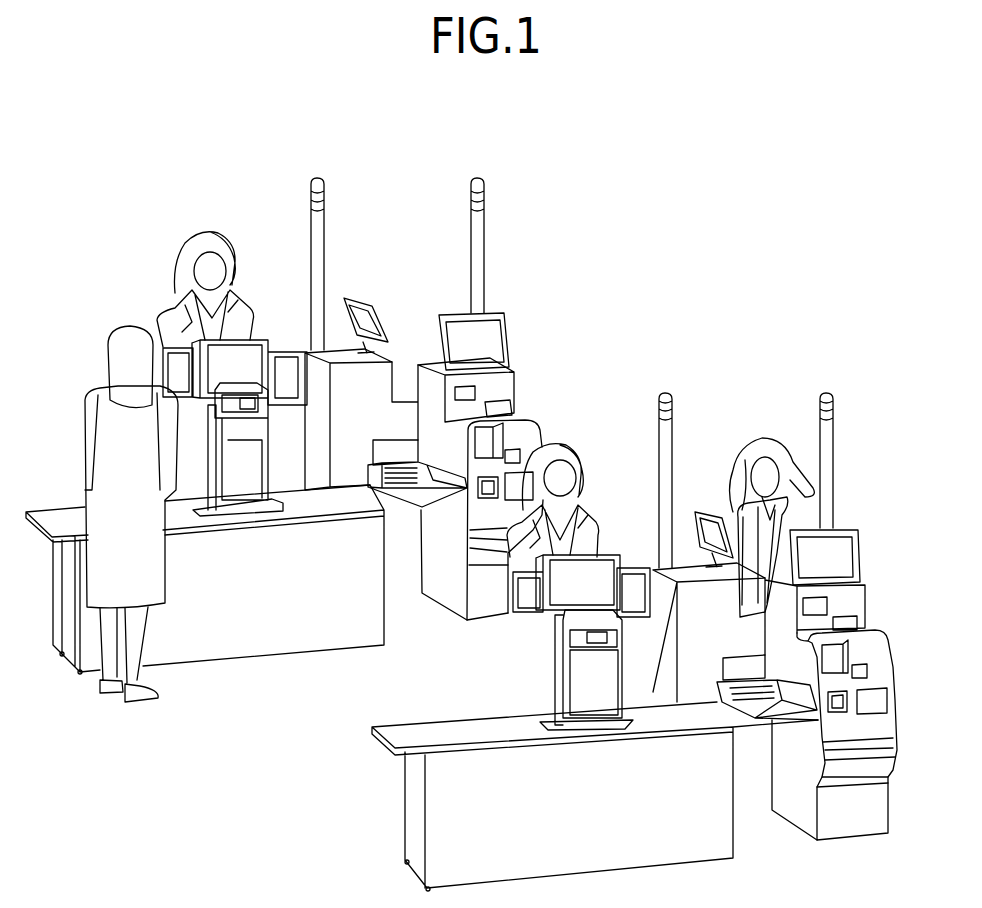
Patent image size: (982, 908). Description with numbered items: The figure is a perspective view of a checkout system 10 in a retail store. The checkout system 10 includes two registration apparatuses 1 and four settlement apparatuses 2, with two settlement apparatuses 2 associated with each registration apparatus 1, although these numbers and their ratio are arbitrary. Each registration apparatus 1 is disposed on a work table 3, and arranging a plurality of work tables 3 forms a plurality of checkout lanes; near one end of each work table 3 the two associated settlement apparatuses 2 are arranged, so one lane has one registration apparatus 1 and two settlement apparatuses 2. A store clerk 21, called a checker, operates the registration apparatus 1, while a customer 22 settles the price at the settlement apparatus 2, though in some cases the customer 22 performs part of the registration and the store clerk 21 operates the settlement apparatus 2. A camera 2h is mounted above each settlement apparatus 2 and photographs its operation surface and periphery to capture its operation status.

The registration apparatus 1 is at (267, 309).
The settlement apparatus 2 is at (363, 284).
The camera 2h is at (318, 174).
The work table 3 is at (50, 504).
The checkout system 10 is at (727, 272).
The store clerk 21 is at (231, 248).
The customer 22 is at (130, 326).